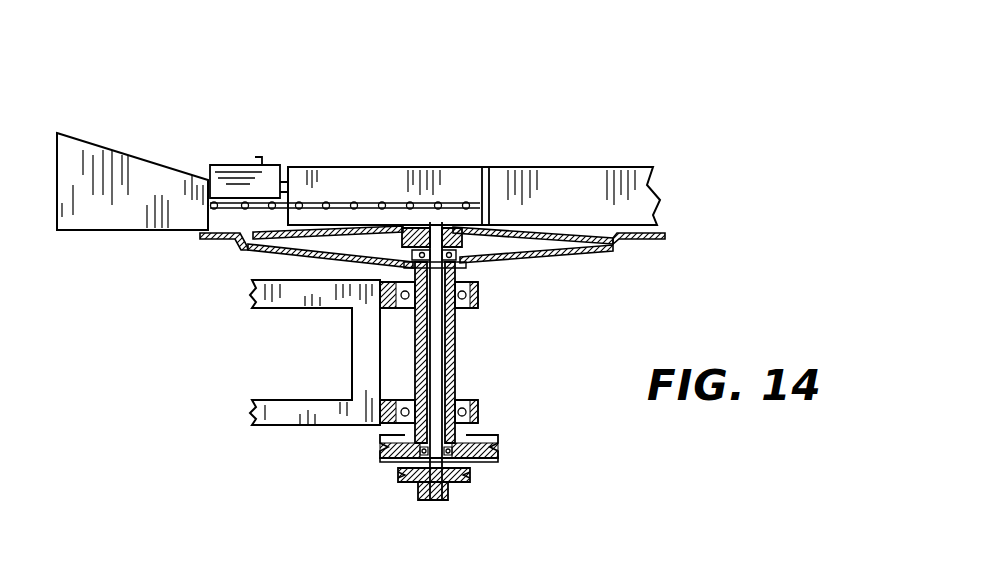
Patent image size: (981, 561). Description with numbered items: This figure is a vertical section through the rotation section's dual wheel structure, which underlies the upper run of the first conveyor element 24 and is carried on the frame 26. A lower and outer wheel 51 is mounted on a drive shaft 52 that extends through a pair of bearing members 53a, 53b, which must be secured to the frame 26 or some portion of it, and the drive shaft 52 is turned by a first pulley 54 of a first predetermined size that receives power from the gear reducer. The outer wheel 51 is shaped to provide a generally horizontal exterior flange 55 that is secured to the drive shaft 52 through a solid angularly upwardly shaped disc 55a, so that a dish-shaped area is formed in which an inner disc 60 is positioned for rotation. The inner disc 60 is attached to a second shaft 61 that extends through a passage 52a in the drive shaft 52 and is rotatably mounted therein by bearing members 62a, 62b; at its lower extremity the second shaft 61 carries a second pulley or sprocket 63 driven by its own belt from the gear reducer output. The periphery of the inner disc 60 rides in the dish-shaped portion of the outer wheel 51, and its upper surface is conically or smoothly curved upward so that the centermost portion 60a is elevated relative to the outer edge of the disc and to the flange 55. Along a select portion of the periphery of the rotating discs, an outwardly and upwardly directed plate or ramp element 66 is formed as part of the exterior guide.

The ramp element 66 is at (105, 143).
The inner disc 60 is at (560, 225).
The centermost portion 60a is at (392, 226).
The bearing member 62a is at (503, 223).
The first conveyor element 24 is at (337, 205).
The exterior flange 55 is at (215, 240).
The angularly upwardly shaped disc 55a is at (616, 246).
The outer wheel 51 is at (262, 255).
The drive shaft 52 is at (462, 342).
The passage 52a is at (460, 368).
The second shaft 61 is at (462, 389).
The bearing member 53a is at (478, 296).
The bearing member 53b is at (478, 418).
The frame 26 is at (272, 426).
The first pulley 54 is at (498, 455).
The bearing member 62b is at (395, 461).
The second pulley or sprocket 63 is at (470, 478).